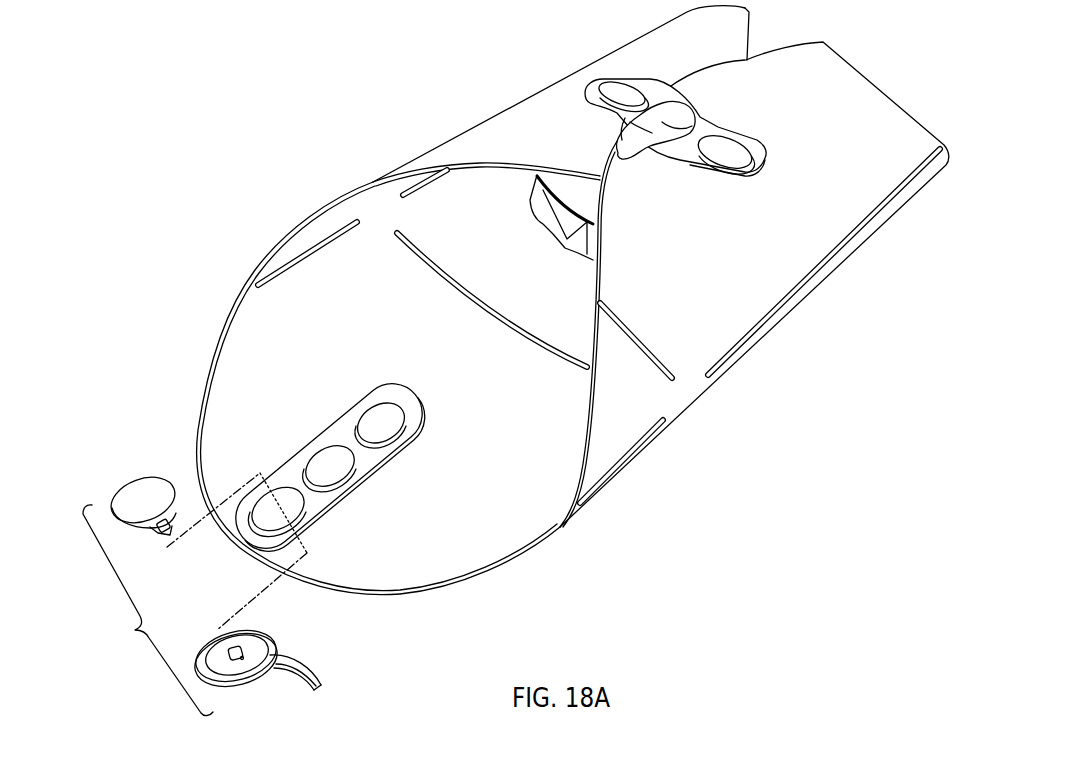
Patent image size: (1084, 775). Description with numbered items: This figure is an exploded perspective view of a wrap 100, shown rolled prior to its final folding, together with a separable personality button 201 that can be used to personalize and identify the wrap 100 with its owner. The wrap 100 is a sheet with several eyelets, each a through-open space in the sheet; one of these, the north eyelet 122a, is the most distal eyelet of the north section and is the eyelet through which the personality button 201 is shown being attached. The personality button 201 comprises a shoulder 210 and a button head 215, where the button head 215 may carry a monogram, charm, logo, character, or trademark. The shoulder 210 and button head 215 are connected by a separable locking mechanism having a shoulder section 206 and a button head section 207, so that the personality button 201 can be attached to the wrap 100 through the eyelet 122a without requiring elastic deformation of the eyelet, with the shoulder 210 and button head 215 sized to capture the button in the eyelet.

The wrap 100 is at (340, 135).
The north eyelet 122a is at (306, 520).
The personality button 201 is at (135, 610).
The shoulder section 206 is at (170, 525).
The button head section 207 is at (243, 655).
The shoulder 210 is at (130, 493).
The button head 215 is at (262, 683).